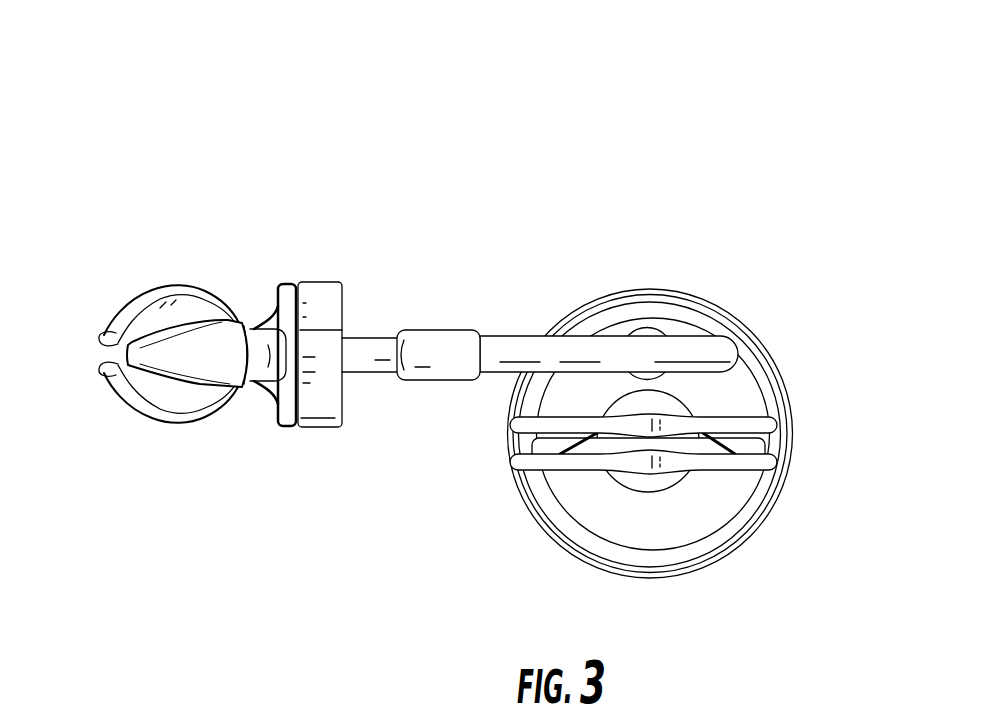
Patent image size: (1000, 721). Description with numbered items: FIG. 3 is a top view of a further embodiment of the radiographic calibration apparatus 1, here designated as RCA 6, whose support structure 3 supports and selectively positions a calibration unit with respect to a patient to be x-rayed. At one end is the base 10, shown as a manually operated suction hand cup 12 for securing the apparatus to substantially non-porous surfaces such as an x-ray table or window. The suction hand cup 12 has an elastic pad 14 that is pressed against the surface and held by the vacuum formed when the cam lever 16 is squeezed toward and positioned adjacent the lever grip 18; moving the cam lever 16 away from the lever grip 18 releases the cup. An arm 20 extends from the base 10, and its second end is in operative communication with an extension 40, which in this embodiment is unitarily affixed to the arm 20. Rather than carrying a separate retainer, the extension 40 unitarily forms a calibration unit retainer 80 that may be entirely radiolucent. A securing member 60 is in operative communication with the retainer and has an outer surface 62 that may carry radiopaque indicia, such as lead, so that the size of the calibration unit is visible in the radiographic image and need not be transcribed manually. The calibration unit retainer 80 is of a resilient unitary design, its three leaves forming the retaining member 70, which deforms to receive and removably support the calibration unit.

The radiographic calibration apparatus 1 is at (844, 72).
The support structure 3 is at (295, 518).
The radiographic calibration apparatus 6 is at (778, 198).
The base 10 is at (678, 429).
The suction hand cup 12 is at (562, 493).
The elastic pad 14 is at (711, 303).
The cam lever 16 is at (775, 462).
The lever grip 18 is at (777, 425).
The arm 20 is at (568, 343).
The extension 40 is at (377, 345).
The securing member 60 is at (281, 308).
The outer surface 62 is at (320, 354).
The retaining member 70 is at (148, 359).
The calibration unit retainer 80 is at (180, 432).